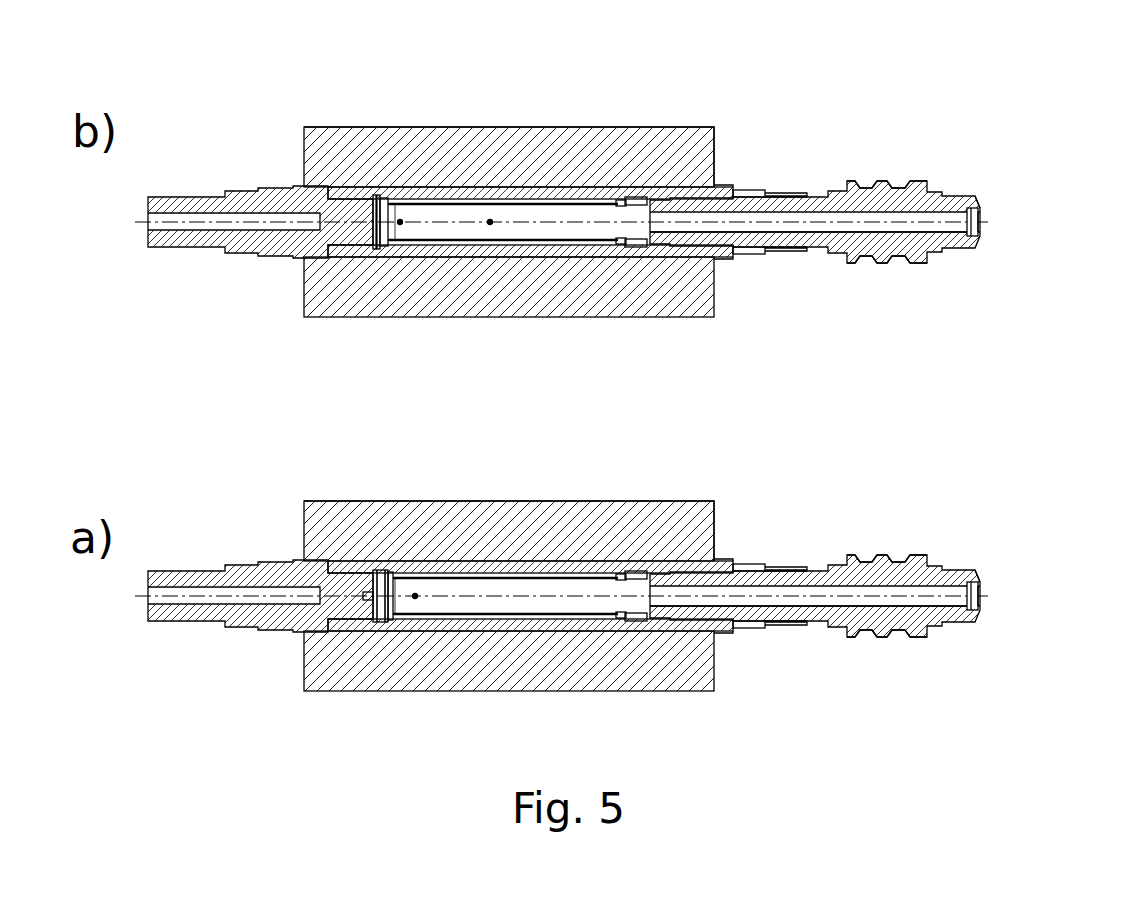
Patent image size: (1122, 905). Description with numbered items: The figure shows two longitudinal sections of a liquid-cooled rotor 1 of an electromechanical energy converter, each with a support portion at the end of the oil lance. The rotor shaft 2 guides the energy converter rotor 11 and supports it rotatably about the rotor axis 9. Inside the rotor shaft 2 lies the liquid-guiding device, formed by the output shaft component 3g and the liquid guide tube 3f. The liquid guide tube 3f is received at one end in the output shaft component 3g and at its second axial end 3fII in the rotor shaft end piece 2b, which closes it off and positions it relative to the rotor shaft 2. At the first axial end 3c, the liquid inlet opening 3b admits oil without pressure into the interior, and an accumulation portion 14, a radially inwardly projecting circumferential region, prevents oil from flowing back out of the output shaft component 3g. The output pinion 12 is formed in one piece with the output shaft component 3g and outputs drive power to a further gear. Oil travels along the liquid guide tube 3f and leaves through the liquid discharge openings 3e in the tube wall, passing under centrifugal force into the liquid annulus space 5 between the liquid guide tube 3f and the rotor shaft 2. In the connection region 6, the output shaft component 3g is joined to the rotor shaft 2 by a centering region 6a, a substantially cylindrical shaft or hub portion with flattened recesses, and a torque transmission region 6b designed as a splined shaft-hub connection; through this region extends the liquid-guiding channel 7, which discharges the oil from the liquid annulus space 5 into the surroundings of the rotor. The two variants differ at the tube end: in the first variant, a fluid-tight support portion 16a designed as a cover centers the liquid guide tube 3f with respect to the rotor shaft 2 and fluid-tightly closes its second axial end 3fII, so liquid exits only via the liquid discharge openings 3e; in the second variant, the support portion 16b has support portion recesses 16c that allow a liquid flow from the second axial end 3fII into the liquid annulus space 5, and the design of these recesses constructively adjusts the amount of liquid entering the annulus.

The liquid-cooled rotor 1 is at (298, 169).
The energy converter rotor 11 is at (641, 126).
The rotor shaft 2 is at (682, 188).
The rotor shaft end piece 2b is at (215, 190).
The liquid discharge openings 3e is at (490, 220).
The liquid guide tube 3f is at (568, 242).
The second axial end of the liquid guide tube 3fII is at (373, 195).
The output shaft component 3g is at (841, 196).
The first axial end 3c is at (985, 200).
The liquid inlet opening 3b is at (983, 217).
The liquid annulus space 5 is at (443, 242).
The connection region 6 is at (759, 183).
The centering region 6a is at (768, 194).
The torque transmission region 6b is at (737, 188).
The liquid-guiding channel 7 is at (775, 252).
The rotor axis 9 is at (832, 234).
The output pinion 12 is at (895, 264).
The accumulation portion 14 is at (976, 238).
The fluid-tight support portion 16a is at (400, 220).
The support portion 16b is at (386, 570).
The support portion recesses 16c is at (365, 602).